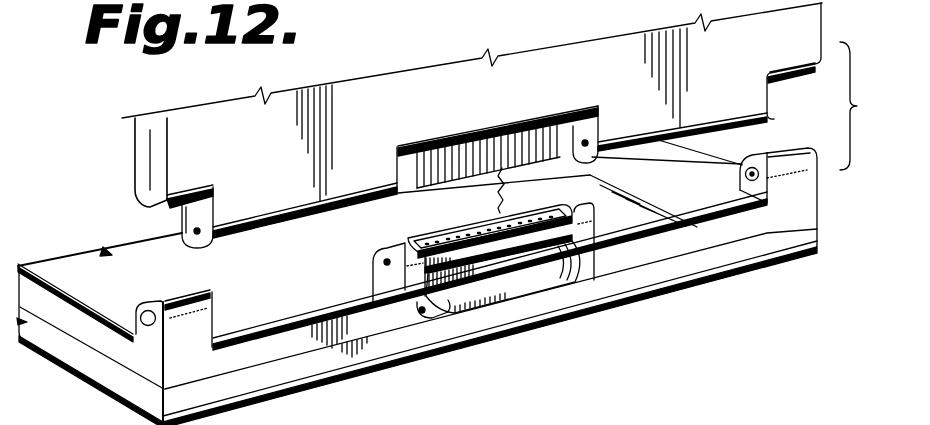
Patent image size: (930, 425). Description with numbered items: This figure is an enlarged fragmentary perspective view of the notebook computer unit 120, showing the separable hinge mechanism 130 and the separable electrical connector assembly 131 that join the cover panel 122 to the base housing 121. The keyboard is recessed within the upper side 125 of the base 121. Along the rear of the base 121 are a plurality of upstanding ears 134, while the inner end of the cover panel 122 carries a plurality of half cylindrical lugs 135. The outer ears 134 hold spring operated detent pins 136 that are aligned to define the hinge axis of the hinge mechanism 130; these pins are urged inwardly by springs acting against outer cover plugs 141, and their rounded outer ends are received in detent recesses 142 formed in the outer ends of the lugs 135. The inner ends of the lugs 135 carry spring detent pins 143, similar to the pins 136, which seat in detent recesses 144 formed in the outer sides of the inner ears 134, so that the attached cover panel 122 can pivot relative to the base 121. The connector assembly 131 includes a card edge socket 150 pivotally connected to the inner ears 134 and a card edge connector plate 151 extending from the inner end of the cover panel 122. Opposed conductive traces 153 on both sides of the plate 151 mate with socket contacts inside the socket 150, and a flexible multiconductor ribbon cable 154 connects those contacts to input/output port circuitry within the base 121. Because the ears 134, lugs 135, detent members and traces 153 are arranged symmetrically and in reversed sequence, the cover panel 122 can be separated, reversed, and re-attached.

The computer unit 120 is at (97, 211).
The base housing 121 is at (97, 370).
The cover panel 122 is at (378, 90).
The upper side 125 is at (60, 262).
The separable hinge mechanism 130 is at (743, 172).
The separable electrical connector assembly 131 is at (519, 190).
The upstanding ears 134 is at (202, 292).
The half cylindrical lugs 135 is at (262, 229).
The spring operated detent pins 136 is at (766, 193).
The outer cover plugs 141 is at (137, 312).
The detent recesses 142 is at (193, 244).
The spring detent pins 143 is at (592, 156).
The detent recesses 144 is at (384, 263).
The card edge socket 150 is at (466, 220).
The card edge connector plate 151 is at (517, 132).
The conductive traces 153 is at (462, 146).
The flexible multiconductor ribbon cable 154 is at (519, 313).